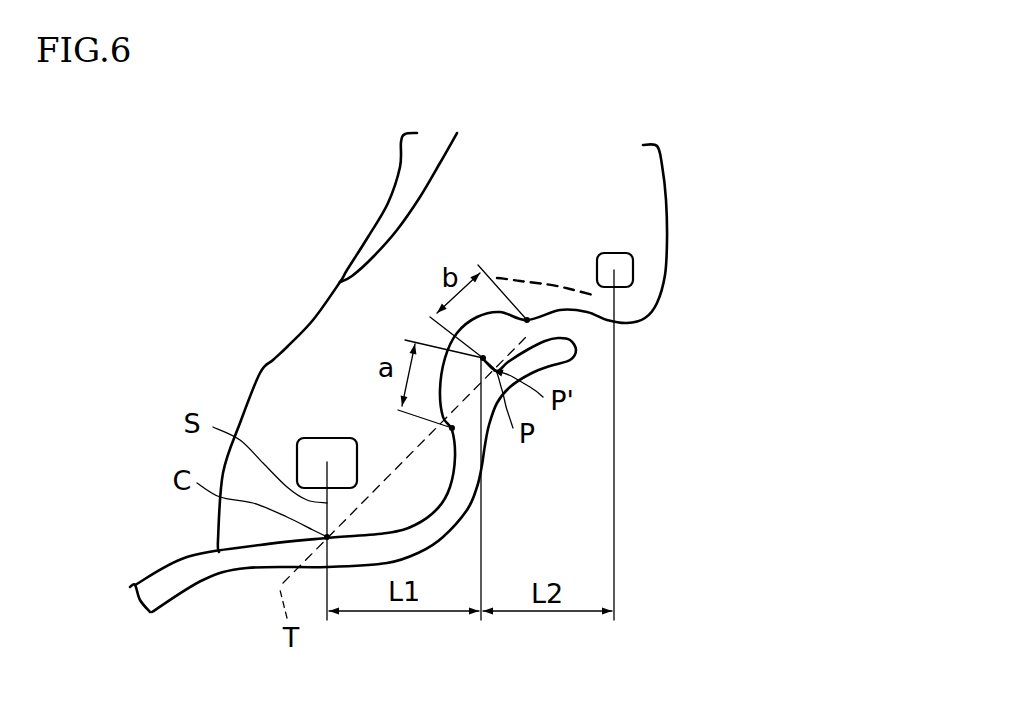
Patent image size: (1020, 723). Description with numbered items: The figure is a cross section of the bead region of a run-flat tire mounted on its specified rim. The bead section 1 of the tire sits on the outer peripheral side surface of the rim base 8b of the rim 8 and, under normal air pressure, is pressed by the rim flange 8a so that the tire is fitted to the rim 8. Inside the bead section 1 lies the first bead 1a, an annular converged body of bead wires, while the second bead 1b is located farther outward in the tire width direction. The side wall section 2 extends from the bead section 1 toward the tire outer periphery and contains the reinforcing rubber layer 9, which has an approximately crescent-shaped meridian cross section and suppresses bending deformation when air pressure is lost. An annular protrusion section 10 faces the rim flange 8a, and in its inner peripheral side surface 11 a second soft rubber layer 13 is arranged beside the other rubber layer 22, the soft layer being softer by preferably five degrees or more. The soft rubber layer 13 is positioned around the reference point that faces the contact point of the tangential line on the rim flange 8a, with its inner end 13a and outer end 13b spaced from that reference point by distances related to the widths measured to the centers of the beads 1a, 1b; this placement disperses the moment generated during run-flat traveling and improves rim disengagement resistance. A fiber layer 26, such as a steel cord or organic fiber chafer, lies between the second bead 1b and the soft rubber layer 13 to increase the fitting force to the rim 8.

The bead section 1 is at (222, 353).
The first bead 1a is at (308, 440).
The second bead 1b is at (633, 268).
The side wall section 2 is at (690, 164).
The rim 8 is at (175, 616).
The rim flange 8a is at (565, 358).
The rim base 8b is at (245, 563).
The reinforcing rubber layer 9 is at (397, 170).
The annular protrusion section 10 is at (680, 302).
The inner peripheral side surface 11 is at (577, 311).
The second soft rubber layer 13 is at (484, 352).
The inner end 13a is at (481, 452).
The outer end 13b is at (528, 317).
The other rubber layer 22 is at (412, 498).
The fiber layer 26 is at (571, 290).